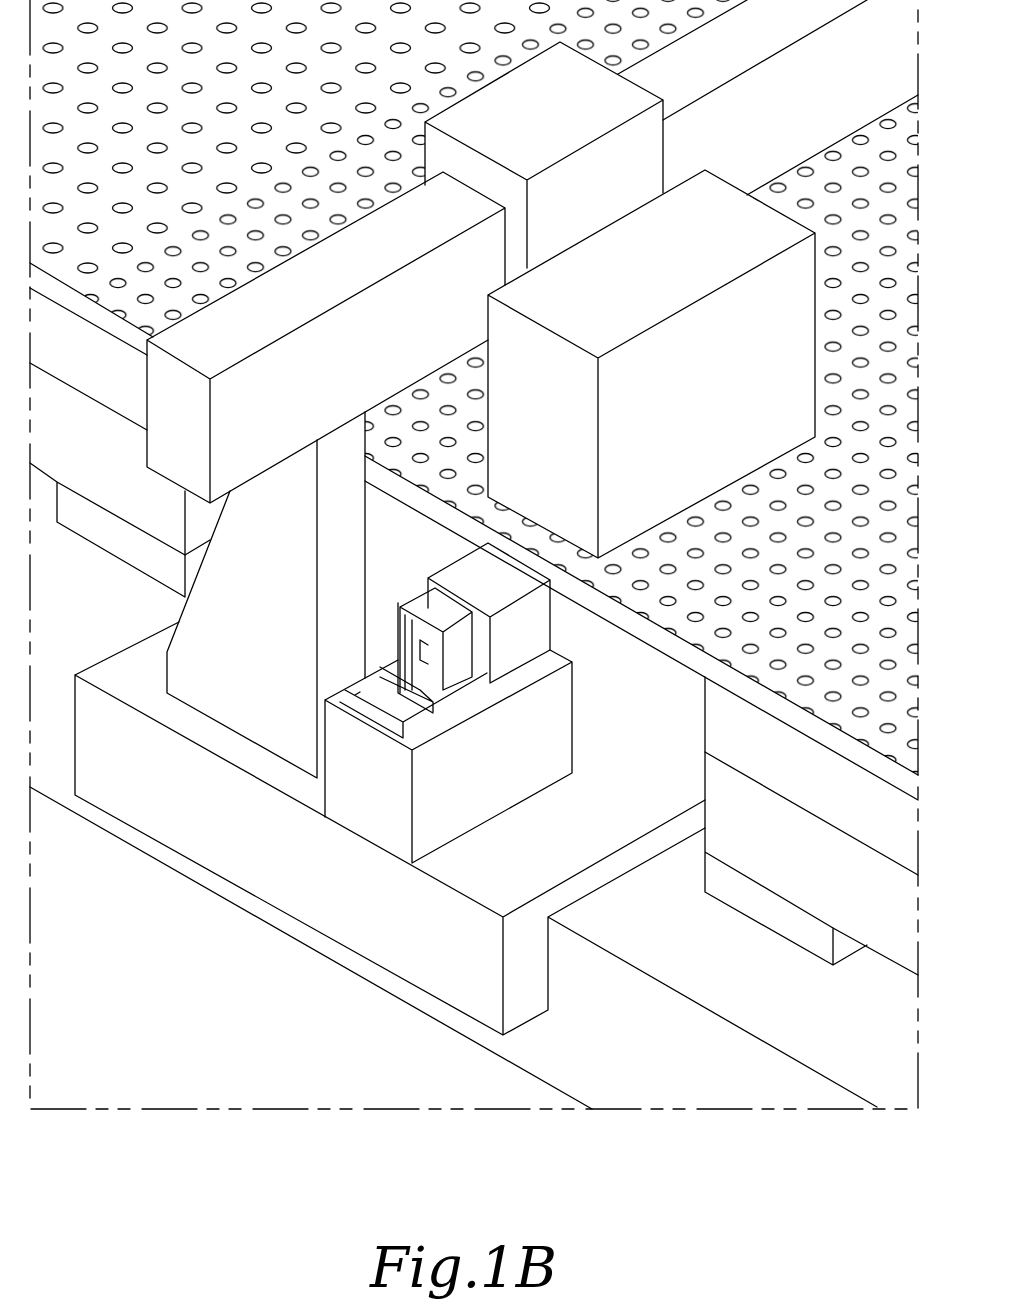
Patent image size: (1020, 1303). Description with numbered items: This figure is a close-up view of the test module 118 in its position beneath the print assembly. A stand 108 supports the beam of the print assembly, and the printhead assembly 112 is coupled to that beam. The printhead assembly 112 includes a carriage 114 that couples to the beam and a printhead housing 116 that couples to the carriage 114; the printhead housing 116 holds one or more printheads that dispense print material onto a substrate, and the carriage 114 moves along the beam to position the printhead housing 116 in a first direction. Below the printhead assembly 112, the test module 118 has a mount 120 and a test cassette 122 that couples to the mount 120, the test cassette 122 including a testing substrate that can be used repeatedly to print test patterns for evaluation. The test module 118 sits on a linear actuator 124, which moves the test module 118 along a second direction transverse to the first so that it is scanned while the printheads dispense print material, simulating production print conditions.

The stand 108 is at (243, 610).
The printhead assembly 112 is at (738, 154).
The carriage 114 is at (562, 122).
The printhead housing 116 is at (726, 403).
The test module 118 is at (515, 694).
The mount 120 is at (467, 560).
The test cassette 122 is at (412, 603).
The linear actuator 124 is at (488, 803).